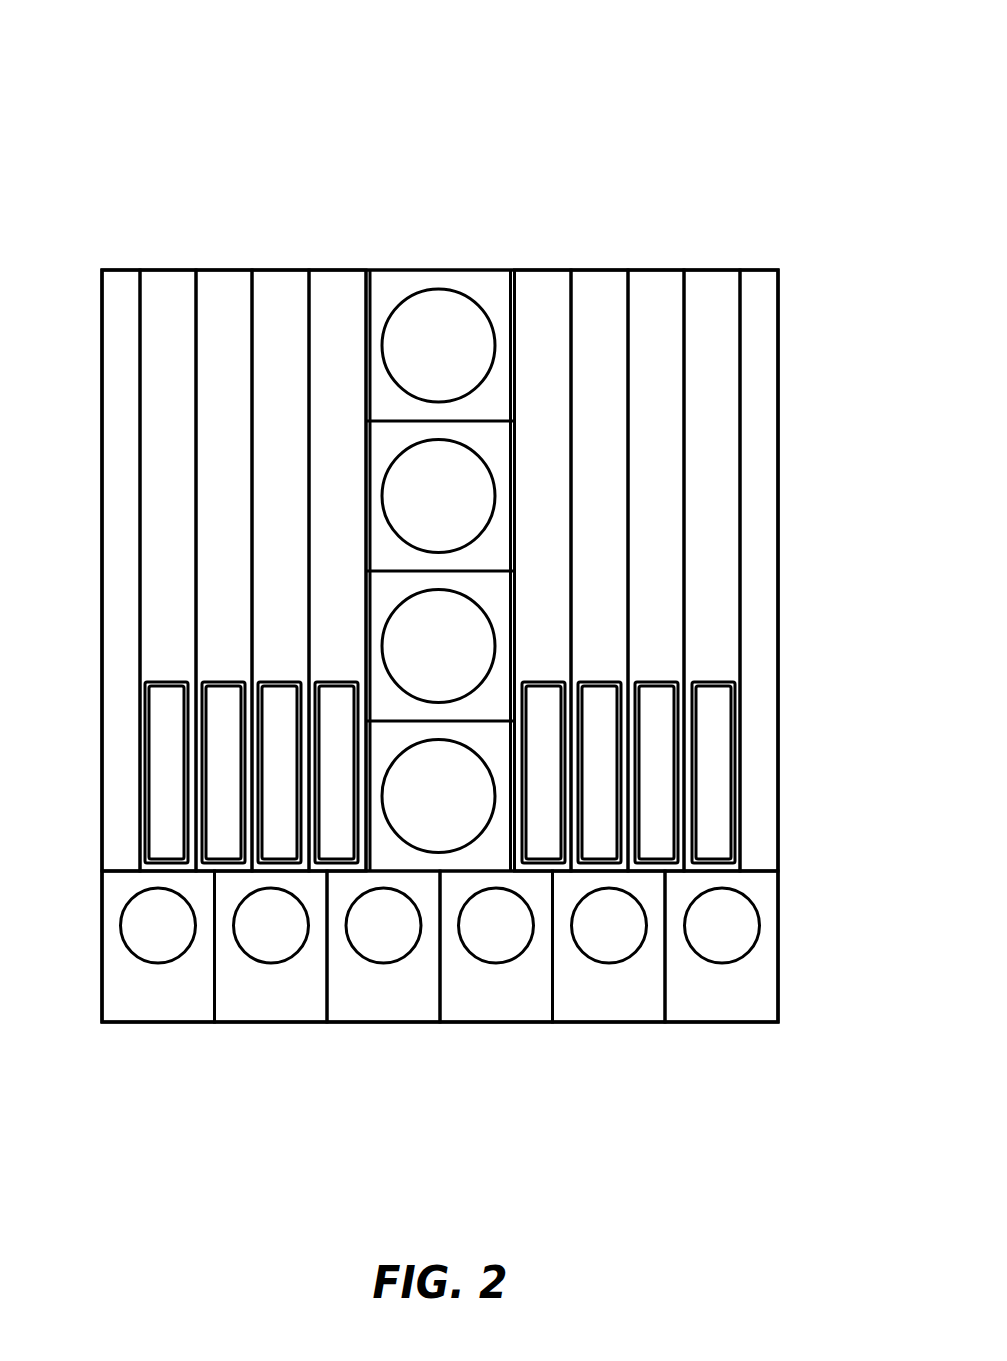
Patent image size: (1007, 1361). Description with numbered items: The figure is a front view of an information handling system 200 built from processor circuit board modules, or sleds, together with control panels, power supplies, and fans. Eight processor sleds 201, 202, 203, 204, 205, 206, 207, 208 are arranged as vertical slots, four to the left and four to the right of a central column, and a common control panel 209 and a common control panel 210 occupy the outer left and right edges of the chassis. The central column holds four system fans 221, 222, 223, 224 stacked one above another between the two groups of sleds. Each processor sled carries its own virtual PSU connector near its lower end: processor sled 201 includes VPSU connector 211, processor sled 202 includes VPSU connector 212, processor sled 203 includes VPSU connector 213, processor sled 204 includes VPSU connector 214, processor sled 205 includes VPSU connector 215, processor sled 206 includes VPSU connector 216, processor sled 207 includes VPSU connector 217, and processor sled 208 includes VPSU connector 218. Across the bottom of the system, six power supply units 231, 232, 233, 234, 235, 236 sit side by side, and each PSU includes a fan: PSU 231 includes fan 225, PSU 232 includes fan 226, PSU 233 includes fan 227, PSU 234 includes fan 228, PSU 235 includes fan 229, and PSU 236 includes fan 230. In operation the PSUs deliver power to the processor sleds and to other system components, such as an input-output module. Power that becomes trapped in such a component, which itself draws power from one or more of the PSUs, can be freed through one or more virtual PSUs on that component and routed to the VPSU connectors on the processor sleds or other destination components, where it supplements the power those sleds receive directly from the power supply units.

The information handling system 200 is at (728, 95).
The processor sled 201 is at (157, 270).
The processor sled 202 is at (214, 270).
The processor sled 203 is at (270, 270).
The processor sled 204 is at (337, 270).
The processor sled 205 is at (537, 270).
The processor sled 206 is at (588, 270).
The processor sled 207 is at (658, 270).
The processor sled 208 is at (717, 270).
The common control panel 209 is at (122, 269).
The common control panel 210 is at (760, 270).
The VPSU connector 211 is at (145, 757).
The VPSU connector 212 is at (202, 718).
The VPSU connector 213 is at (258, 700).
The VPSU connector 214 is at (342, 683).
The VPSU connector 215 is at (523, 682).
The VPSU connector 216 is at (620, 692).
The VPSU connector 217 is at (677, 702).
The VPSU connector 218 is at (735, 755).
The fan 221 is at (427, 289).
The fan 222 is at (368, 430).
The fan 223 is at (496, 625).
The fan 224 is at (395, 767).
The fan 225 is at (121, 925).
The fan 226 is at (247, 898).
The fan 227 is at (359, 897).
The fan 228 is at (515, 895).
The fan 229 is at (631, 895).
The fan 230 is at (760, 928).
The power supply unit 231 is at (158, 1022).
The power supply unit 232 is at (271, 1022).
The power supply unit 233 is at (383, 1022).
The power supply unit 234 is at (496, 1022).
The power supply unit 235 is at (609, 1022).
The power supply unit 236 is at (722, 1022).